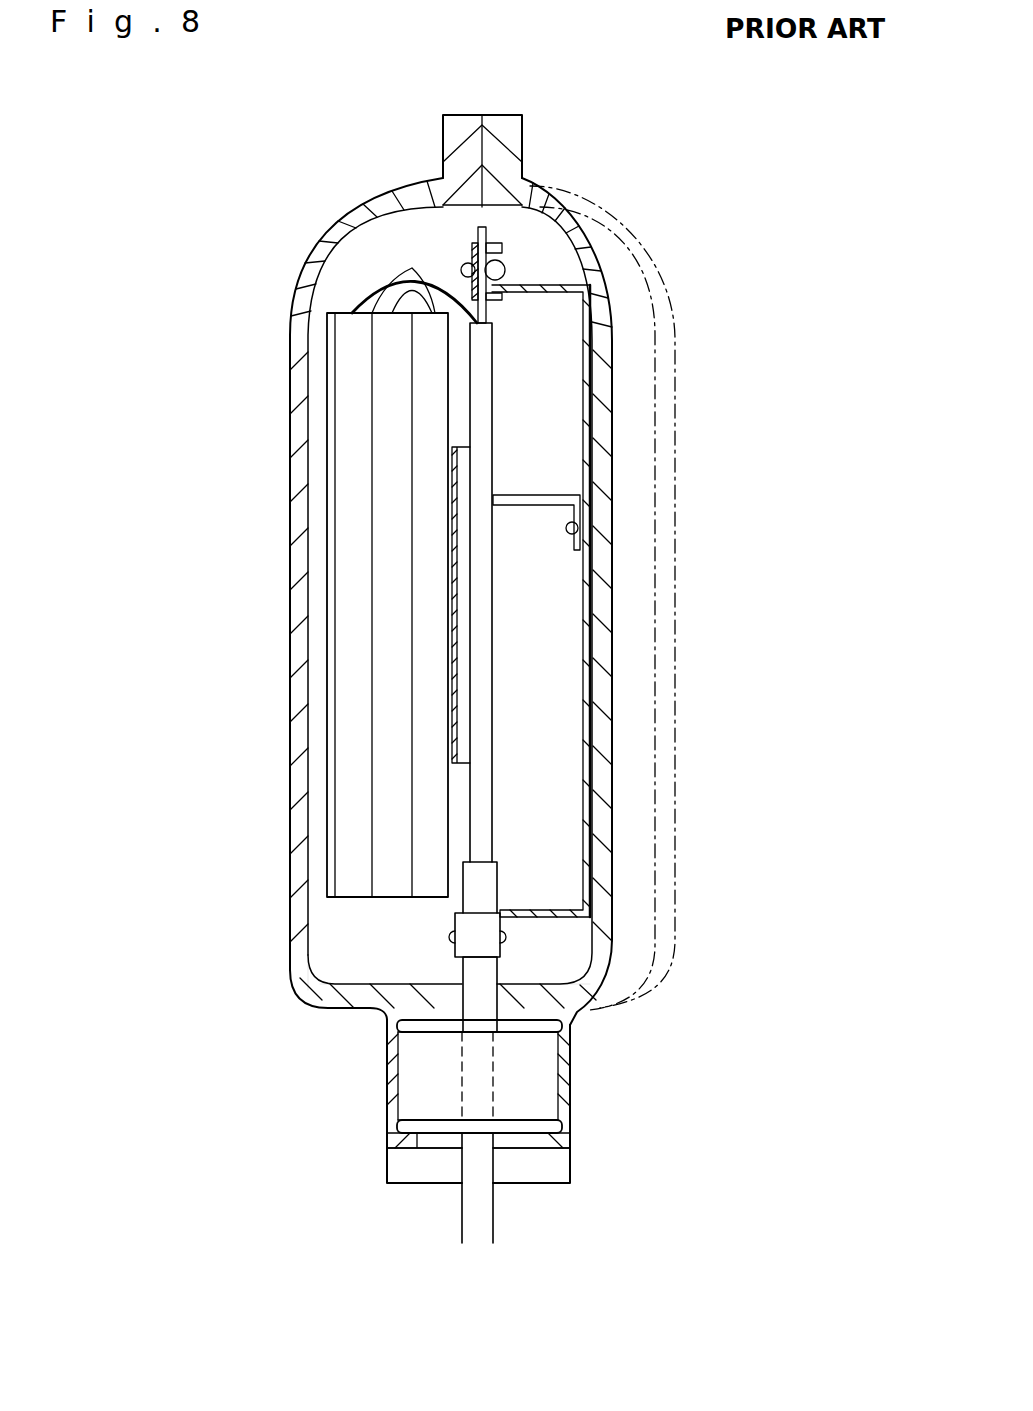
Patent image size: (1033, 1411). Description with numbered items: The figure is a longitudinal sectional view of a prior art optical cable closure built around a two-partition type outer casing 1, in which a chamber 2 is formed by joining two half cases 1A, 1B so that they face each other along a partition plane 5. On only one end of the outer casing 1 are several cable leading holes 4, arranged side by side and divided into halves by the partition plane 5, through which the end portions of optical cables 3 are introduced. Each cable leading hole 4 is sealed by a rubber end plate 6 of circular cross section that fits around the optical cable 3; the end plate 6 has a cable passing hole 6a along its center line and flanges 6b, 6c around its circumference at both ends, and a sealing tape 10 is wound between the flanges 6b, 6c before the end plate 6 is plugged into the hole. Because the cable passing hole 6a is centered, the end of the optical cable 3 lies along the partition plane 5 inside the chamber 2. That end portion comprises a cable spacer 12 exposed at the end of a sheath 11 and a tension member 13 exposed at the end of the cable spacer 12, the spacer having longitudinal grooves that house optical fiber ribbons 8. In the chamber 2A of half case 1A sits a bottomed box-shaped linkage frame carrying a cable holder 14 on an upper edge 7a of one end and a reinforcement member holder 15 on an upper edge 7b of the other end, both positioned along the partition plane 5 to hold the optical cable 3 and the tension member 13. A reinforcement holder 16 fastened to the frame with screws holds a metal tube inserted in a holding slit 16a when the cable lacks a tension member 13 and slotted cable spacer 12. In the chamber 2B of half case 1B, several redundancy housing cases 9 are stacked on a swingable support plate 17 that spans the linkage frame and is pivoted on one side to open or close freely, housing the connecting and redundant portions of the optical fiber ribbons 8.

The outer casing 1 is at (290, 337).
The half case 1A is at (612, 612).
The half case 1B is at (290, 547).
The chamber 2 is at (345, 952).
The chamber 2A is at (563, 943).
The chamber 2B is at (330, 923).
The optical cable 3 is at (460, 1210).
The cable leading hole 4 is at (545, 1067).
The partition plane 5 is at (483, 148).
The end plate 6 is at (437, 1080).
The cable passing hole 6a is at (483, 1093).
The flange 6b is at (382, 1123).
The flange 6c is at (388, 1025).
The upper edge 7a is at (503, 943).
The upper edge 7b is at (503, 258).
The optical fiber ribbon 8 is at (402, 292).
The redundancy housing case 9 is at (430, 443).
The sealing tape 10 is at (560, 1097).
The sheath 11 is at (488, 878).
The cable spacer 12 is at (488, 682).
The tension member 13 is at (445, 210).
The cable holder 14 is at (457, 930).
The reinforcement member holder 15 is at (470, 248).
The reinforcement holder 16 is at (565, 497).
The holding slit 16a is at (523, 507).
The swingable support plate 17 is at (593, 358).